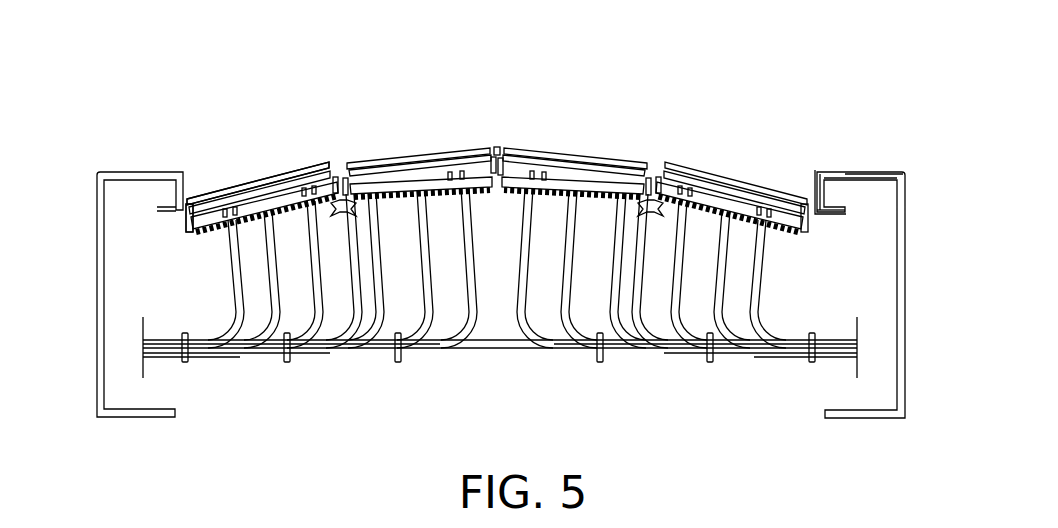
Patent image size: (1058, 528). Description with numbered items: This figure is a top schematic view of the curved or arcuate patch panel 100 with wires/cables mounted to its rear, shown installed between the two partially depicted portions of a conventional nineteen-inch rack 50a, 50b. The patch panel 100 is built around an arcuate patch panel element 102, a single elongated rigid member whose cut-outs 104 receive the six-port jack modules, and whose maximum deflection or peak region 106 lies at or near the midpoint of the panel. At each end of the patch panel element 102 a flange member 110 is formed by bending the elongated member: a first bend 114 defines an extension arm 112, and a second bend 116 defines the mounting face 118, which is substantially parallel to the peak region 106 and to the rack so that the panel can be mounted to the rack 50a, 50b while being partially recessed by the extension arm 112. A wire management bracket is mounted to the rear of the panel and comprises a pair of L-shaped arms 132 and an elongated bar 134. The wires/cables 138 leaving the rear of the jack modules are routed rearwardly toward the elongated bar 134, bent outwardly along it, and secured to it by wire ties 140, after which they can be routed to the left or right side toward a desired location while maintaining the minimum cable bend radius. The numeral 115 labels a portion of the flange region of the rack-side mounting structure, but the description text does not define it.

The rack 50a is at (905, 368).
The rack 50b is at (97, 238).
The patch panel 100 is at (497, 186).
The patch panel element 102 is at (657, 180).
The cut-outs 104 is at (280, 202).
The peak region 106 is at (497, 150).
The flange member 110 is at (839, 107).
The extension arm 112 is at (190, 188).
The first bend 114 is at (900, 179).
The bracket inner flange 115 is at (853, 187).
The second bend 116 is at (838, 208).
The mounting face 118 is at (817, 178).
The L-shaped arms 132 is at (357, 253).
The elongated bar 134 is at (498, 343).
The wires/cables 138 is at (431, 290).
The wire ties 140 is at (397, 360).